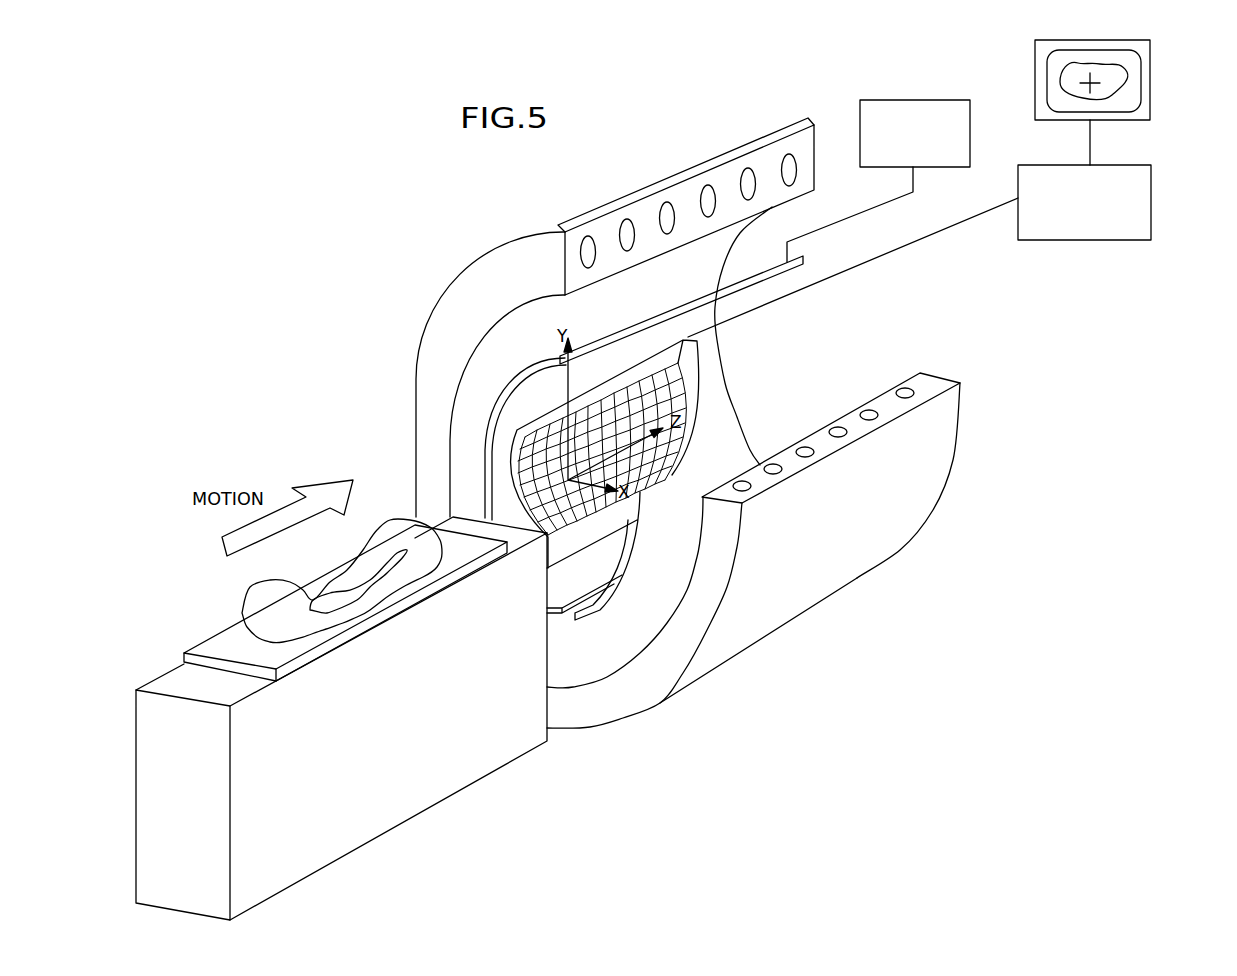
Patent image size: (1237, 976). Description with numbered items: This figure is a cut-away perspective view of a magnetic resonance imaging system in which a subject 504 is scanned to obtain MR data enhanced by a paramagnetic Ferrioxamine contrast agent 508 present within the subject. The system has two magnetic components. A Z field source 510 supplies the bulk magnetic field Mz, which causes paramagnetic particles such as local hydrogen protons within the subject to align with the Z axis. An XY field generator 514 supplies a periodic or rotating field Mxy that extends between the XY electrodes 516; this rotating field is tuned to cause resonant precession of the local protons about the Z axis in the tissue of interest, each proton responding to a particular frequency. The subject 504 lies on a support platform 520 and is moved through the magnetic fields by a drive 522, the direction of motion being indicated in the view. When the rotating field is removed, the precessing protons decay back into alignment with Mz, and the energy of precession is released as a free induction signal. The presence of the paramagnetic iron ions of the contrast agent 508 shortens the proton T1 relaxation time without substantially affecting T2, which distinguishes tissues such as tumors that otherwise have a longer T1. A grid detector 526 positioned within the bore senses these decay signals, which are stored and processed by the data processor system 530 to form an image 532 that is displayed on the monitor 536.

The subject 504 is at (258, 601).
The contrast agent 508 is at (402, 551).
The Z field source 510 is at (483, 282).
The XY field generator 514 is at (878, 181).
The XY electrodes 516 is at (767, 272).
The support platform 520 is at (197, 645).
The drive 522 is at (366, 688).
The grid detector 526 is at (677, 383).
The data processor system 530 is at (919, 251).
The image 532 is at (1117, 77).
The monitor 536 is at (1036, 62).